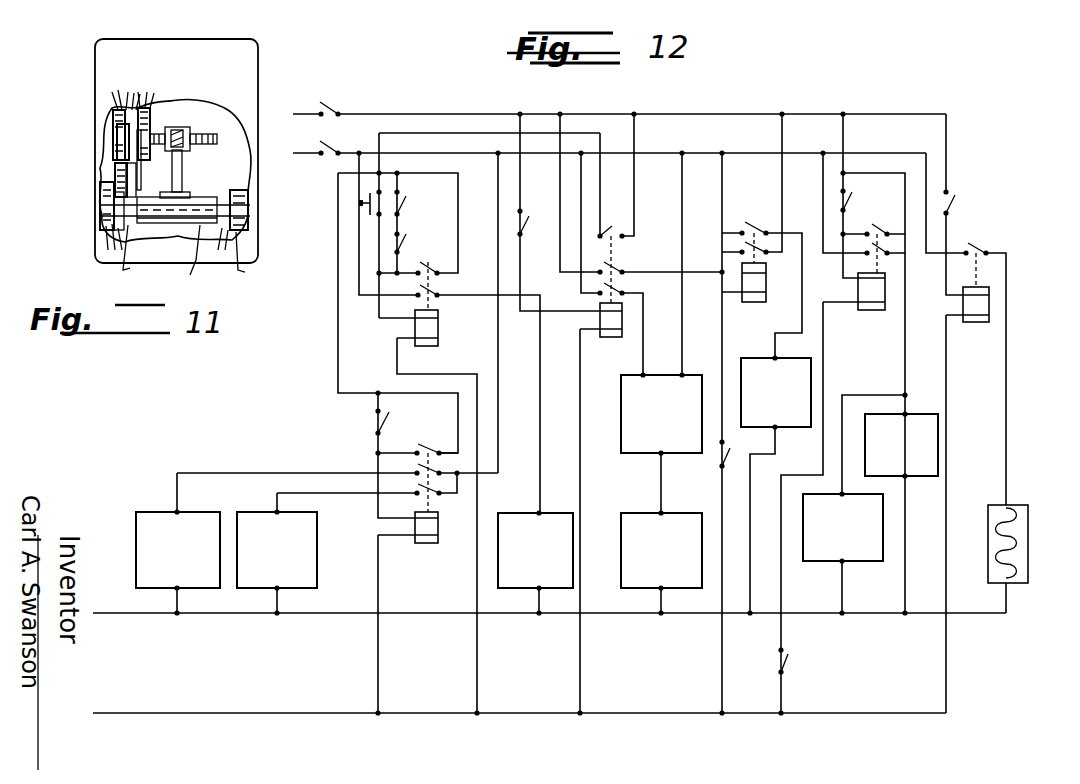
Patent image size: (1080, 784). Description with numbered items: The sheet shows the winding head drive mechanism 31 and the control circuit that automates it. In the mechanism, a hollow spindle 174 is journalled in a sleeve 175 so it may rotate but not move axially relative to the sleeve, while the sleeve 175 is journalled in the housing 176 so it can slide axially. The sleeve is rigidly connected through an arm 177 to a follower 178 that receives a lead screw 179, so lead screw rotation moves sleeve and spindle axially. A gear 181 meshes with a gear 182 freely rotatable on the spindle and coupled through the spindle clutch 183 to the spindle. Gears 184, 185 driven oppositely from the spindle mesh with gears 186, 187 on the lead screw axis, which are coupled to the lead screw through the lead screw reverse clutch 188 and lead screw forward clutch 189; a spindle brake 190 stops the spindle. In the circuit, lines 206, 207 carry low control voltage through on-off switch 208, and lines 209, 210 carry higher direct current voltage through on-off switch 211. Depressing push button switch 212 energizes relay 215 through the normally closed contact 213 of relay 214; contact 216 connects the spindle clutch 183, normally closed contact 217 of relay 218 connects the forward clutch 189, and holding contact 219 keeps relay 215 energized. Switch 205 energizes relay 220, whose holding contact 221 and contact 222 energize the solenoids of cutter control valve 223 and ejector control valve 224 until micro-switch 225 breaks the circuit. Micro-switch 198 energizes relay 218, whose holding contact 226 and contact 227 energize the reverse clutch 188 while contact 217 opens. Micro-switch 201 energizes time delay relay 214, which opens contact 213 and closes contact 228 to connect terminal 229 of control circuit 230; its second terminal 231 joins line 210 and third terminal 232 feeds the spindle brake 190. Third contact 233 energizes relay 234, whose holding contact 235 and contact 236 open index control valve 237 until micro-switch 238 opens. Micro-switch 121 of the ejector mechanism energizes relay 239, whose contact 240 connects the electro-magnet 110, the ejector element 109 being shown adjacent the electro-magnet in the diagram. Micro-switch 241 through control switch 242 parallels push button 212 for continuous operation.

In FIG. 11, the lead screw drive unit 31 is at (88, 50).
In FIG. 11, the hollow spindle 174 is at (123, 268).
In FIG. 11, the sleeve 175 is at (190, 275).
In FIG. 11, the housing 176 is at (258, 230).
In FIG. 11, the arm 177 is at (183, 170).
In FIG. 11, the follower 178 is at (186, 128).
In FIG. 11, the lead screw 179 is at (204, 134).
In FIG. 11, the gear 181 is at (113, 185).
In FIG. 11, the gear 182 is at (100, 215).
In FIG. 11, the spindle clutch 183 is at (107, 240).
In FIG. 12, the spindle clutch 183 is at (514, 513).
In FIG. 11, the gear 184 is at (113, 115).
In FIG. 11, the gear 185 is at (158, 108).
In FIG. 11, the gear 186 is at (114, 140).
In FIG. 11, the gear 187 is at (142, 150).
In FIG. 11, the lead screw reverse clutch 188 is at (124, 105).
In FIG. 12, the lead screw reverse clutch 188 is at (136, 537).
In FIG. 11, the lead screw forward clutch 189 is at (150, 104).
In FIG. 12, the lead screw forward clutch 189 is at (317, 560).
In FIG. 11, the spindle brake 190 is at (245, 272).
In FIG. 12, the spindle brake 190 is at (640, 513).
In FIG. 12, the solenoid valve 109 is at (1010, 592).
In FIG. 12, the electro-magnet 110 is at (1010, 512).
In FIG. 12, the micro-switch 121 is at (957, 204).
In FIG. 12, the micro-switch 198 is at (386, 425).
In FIG. 12, the micro-switch 201 is at (527, 239).
In FIG. 12, the switch 205 is at (840, 204).
In FIG. 12, the line 206 is at (409, 716).
In FIG. 12, the line 207 is at (428, 114).
In FIG. 12, the on-off switch 208 is at (335, 110).
In FIG. 12, the line 209 is at (405, 616).
In FIG. 12, the line 210 is at (437, 158).
In FIG. 12, the on-off switch 211 is at (330, 148).
In FIG. 12, the push button switch 212 is at (359, 203).
In FIG. 12, the normally closed contact 213 is at (608, 232).
In FIG. 12, the relay 214 is at (609, 338).
In FIG. 12, the relay 215 is at (440, 334).
In FIG. 12, the contact 216 is at (436, 289).
In FIG. 12, the normally closed contact 217 is at (418, 495).
In FIG. 12, the relay 218 is at (424, 545).
In FIG. 12, the holding contact 219 is at (432, 266).
In FIG. 12, the relay 220 is at (873, 312).
In FIG. 12, the holding contact 221 is at (873, 222).
In FIG. 12, the contact 222 is at (876, 246).
In FIG. 12, the cutter control valve 223 is at (938, 430).
In FIG. 12, the ejector control valve 224 is at (855, 564).
In FIG. 12, the micro-switch 225 is at (786, 662).
In FIG. 12, the holding contact 226 is at (418, 440).
In FIG. 12, the contact 227 is at (418, 463).
In FIG. 12, the contact 228 is at (620, 287).
In FIG. 12, the terminal 229 is at (640, 373).
In FIG. 12, the control circuit 230 is at (621, 398).
In FIG. 12, the second terminal 231 is at (684, 373).
In FIG. 12, the third terminal 232 is at (658, 455).
In FIG. 12, the third contact 233 is at (618, 260).
In FIG. 12, the relay 234 is at (742, 284).
In FIG. 12, the holding contact 235 is at (742, 243).
In FIG. 12, the contact 236 is at (751, 220).
In FIG. 12, the index control valve 237 is at (758, 358).
In FIG. 12, the micro-switch 238 is at (728, 446).
In FIG. 12, the relay 239 is at (989, 303).
In FIG. 12, the contact 240 is at (978, 243).
In FIG. 12, the micro-switch 241 is at (405, 240).
In FIG. 12, the control switch 242 is at (405, 205).